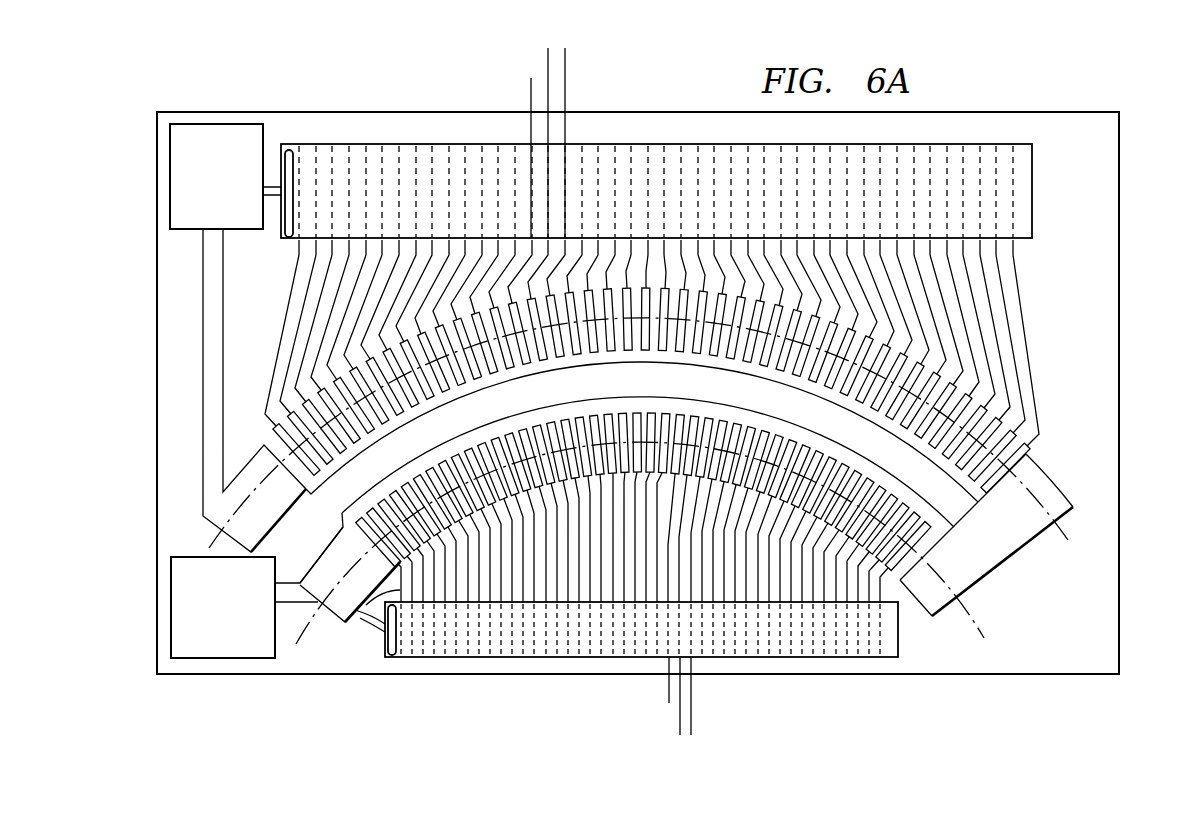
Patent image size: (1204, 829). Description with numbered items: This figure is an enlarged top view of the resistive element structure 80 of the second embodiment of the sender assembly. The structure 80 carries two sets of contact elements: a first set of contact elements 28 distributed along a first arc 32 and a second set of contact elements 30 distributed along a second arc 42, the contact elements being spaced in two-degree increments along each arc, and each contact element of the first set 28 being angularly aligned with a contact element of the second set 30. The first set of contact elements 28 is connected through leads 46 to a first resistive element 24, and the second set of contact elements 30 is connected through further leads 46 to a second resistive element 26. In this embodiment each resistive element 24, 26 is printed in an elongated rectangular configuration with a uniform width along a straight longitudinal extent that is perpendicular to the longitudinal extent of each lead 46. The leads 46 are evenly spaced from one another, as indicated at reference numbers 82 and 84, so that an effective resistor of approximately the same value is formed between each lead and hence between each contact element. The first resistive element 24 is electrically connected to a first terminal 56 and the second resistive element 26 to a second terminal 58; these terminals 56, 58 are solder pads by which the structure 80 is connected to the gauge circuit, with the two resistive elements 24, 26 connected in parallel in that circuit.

The first resistive element 24 is at (898, 636).
The second resistive element 26 is at (1032, 172).
The first set of contact elements 28 is at (345, 513).
The second set of contact elements 30 is at (943, 485).
The first arc 32 is at (980, 624).
The second arc 42 is at (1060, 533).
The leads 46 is at (1013, 205).
The first terminal 56 is at (234, 615).
The second terminal 58 is at (230, 186).
The resistive element structure 80 is at (1121, 392).
The lead spacing 82 is at (680, 694).
The lead spacing 84 is at (565, 59).